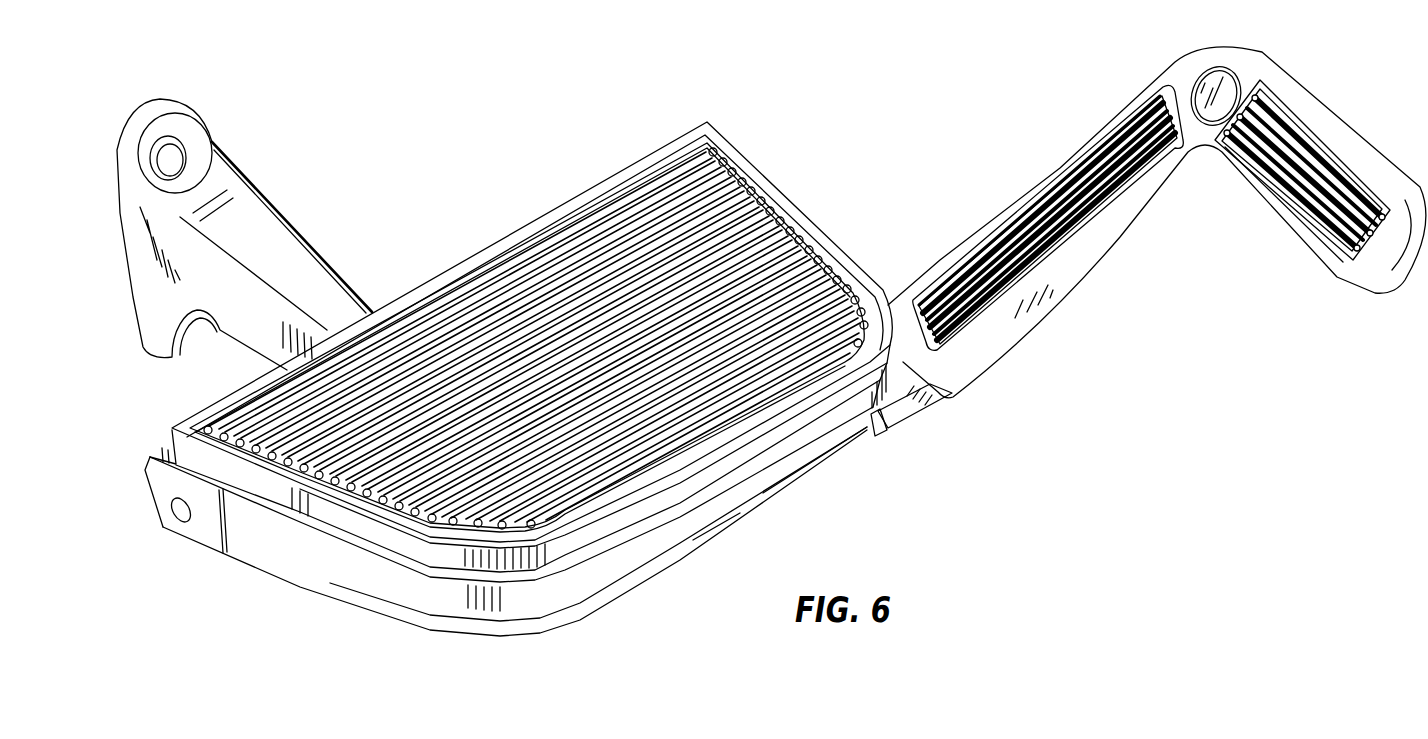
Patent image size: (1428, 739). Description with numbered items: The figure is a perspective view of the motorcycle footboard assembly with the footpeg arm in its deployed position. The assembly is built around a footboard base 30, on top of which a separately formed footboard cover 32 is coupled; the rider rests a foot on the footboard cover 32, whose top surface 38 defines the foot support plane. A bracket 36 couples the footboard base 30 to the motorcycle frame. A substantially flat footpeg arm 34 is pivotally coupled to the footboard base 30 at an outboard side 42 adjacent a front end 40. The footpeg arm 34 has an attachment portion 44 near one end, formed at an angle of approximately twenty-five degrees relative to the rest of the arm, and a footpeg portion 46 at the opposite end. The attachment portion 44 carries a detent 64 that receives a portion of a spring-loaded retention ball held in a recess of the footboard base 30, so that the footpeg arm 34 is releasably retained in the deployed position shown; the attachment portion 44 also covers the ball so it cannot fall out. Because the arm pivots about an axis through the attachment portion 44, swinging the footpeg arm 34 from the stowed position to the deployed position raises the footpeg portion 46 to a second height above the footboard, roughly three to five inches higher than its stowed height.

The footboard base 30 is at (160, 493).
The footboard cover 32 is at (178, 428).
The footpeg arm 34 is at (1093, 247).
The bracket 36 is at (273, 243).
The top surface 38 is at (747, 197).
The front end 40 is at (756, 341).
The outboard side 42 is at (631, 556).
The attachment portion 44 is at (907, 410).
The footpeg portion 46 is at (1327, 133).
The detent 64 is at (871, 428).